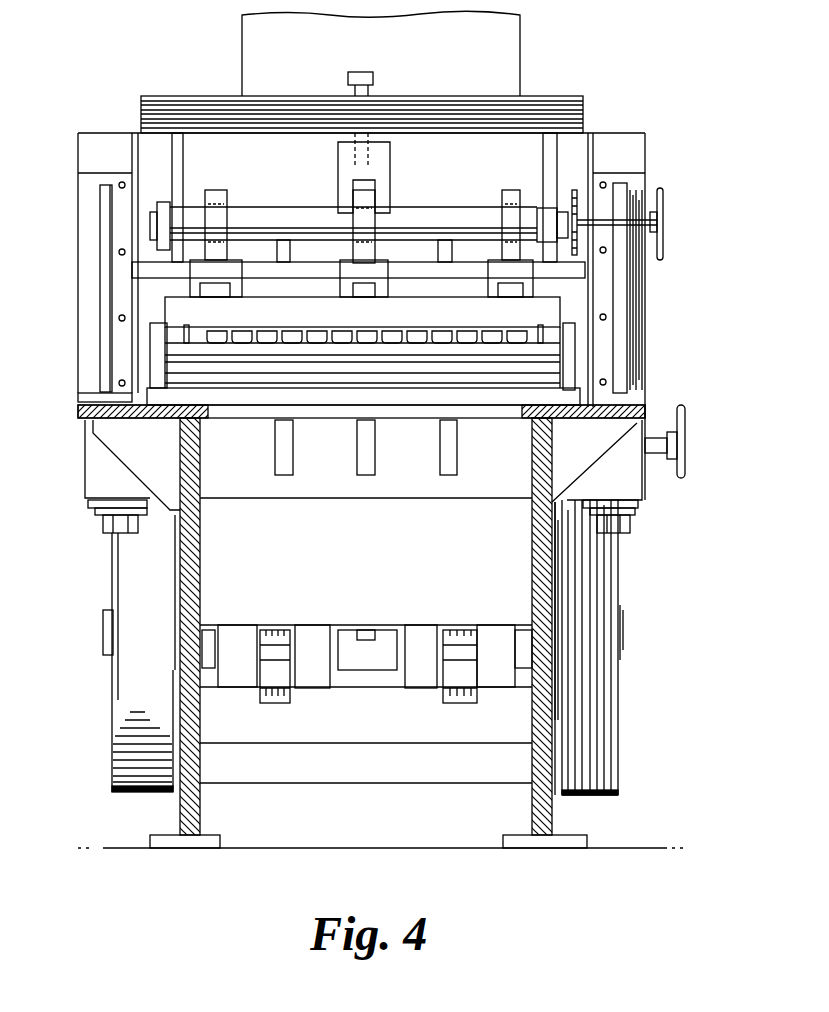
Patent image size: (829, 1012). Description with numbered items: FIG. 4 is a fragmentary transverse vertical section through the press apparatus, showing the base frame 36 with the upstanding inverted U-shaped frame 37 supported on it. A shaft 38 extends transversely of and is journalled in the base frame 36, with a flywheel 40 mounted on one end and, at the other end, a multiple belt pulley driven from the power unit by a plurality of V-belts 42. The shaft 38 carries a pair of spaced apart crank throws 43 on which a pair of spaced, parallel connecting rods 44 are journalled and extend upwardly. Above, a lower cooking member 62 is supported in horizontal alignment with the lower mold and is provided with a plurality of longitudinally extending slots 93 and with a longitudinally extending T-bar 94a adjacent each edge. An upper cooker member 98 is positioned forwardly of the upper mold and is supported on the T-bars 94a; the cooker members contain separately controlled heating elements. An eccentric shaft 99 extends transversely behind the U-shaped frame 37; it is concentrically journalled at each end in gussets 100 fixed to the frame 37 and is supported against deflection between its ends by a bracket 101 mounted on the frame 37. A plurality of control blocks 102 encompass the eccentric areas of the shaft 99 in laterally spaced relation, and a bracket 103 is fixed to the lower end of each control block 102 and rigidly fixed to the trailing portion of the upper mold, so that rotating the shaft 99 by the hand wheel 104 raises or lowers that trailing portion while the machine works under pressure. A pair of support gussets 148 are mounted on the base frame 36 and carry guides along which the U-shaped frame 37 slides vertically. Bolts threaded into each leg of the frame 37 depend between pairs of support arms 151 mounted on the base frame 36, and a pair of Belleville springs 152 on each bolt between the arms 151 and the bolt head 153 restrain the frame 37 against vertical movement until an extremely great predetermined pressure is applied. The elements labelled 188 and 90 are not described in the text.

The U-shaped frame 37 is at (159, 104).
The gussets 100 is at (543, 155).
The bracket 101 is at (385, 174).
The control blocks 102 is at (500, 210).
The eccentric shaft 99 is at (444, 212).
The hand wheel 104 is at (664, 207).
The support gussets 148 is at (104, 290).
The right side plate 188 is at (618, 305).
The bracket 103 is at (494, 285).
The upper cooker member 98 is at (368, 316).
The slots 93 is at (470, 340).
The T-bar 94a is at (540, 350).
The lower cooking member 62 is at (415, 345).
The handwheel 90 is at (683, 412).
The support arms 151 is at (630, 478).
The Belleville springs 152 is at (640, 506).
The head 153 is at (615, 527).
The base frame 36 is at (545, 822).
The connecting rods 44 is at (458, 705).
The crank throws 43 is at (424, 688).
The flywheel 40 is at (115, 722).
The V-belts 42 is at (618, 758).
The shaft 38 is at (622, 640).